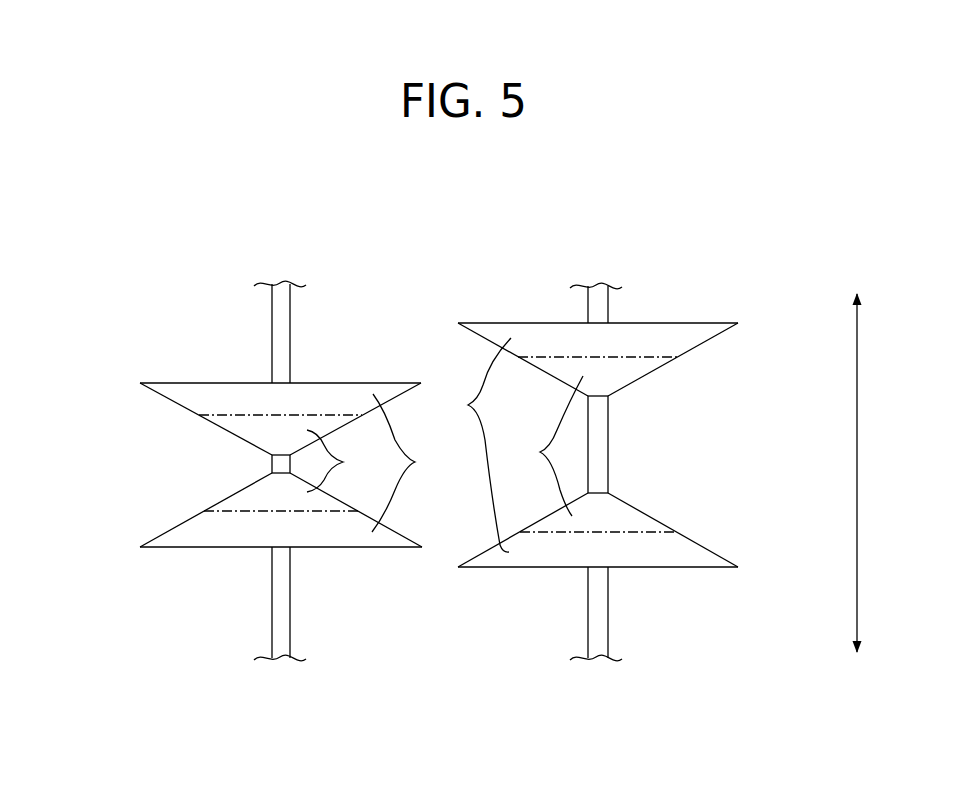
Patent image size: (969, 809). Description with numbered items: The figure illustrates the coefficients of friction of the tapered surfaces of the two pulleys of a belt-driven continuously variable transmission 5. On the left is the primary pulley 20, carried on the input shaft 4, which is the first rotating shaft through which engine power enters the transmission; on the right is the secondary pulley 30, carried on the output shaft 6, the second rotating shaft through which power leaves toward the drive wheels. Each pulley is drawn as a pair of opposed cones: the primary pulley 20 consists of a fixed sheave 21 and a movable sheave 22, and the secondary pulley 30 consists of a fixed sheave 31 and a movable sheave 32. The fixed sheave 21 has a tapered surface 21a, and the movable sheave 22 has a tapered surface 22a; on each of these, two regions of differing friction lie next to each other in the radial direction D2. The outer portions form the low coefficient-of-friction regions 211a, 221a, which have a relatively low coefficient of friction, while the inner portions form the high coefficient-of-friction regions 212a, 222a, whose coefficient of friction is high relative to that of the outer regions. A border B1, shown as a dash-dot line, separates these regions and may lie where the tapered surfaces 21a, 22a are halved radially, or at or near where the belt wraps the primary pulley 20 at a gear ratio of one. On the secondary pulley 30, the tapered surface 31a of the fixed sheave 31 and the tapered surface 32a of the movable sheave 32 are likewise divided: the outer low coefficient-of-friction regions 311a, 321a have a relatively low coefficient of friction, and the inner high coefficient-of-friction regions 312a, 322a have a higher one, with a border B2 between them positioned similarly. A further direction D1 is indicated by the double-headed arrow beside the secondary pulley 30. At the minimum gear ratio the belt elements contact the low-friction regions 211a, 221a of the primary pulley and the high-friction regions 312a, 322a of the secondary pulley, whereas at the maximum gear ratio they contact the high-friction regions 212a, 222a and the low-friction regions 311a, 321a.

The continuously variable transmission 5 is at (768, 271).
The primary pulley 20 is at (207, 319).
The fixed sheave 21 is at (170, 382).
The tapered surface 21a is at (92, 392).
The low coefficient-of-friction region 211a is at (200, 399).
The high coefficient-of-friction region 212a is at (252, 433).
The movable sheave 22 is at (170, 549).
The tapered surface 22a is at (92, 467).
The high coefficient-of-friction region 222a is at (252, 492).
The low coefficient-of-friction region 221a is at (199, 527).
The input shaft 4 is at (291, 310).
The border B1 is at (332, 416).
The secondary pulley 30 is at (497, 291).
The movable sheave 32 is at (691, 317).
The tapered surface 32a is at (782, 332).
The low coefficient-of-friction region 321a is at (684, 340).
The high coefficient-of-friction region 322a is at (637, 372).
The fixed sheave 31 is at (692, 572).
The tapered surface 31a is at (782, 470).
The high coefficient-of-friction region 312a is at (630, 516).
The low coefficient-of-friction region 311a is at (683, 546).
The output shaft 6 is at (609, 307).
The border B2 is at (552, 356).
The height direction D1 is at (873, 473).
The radial direction D2 is at (442, 750).